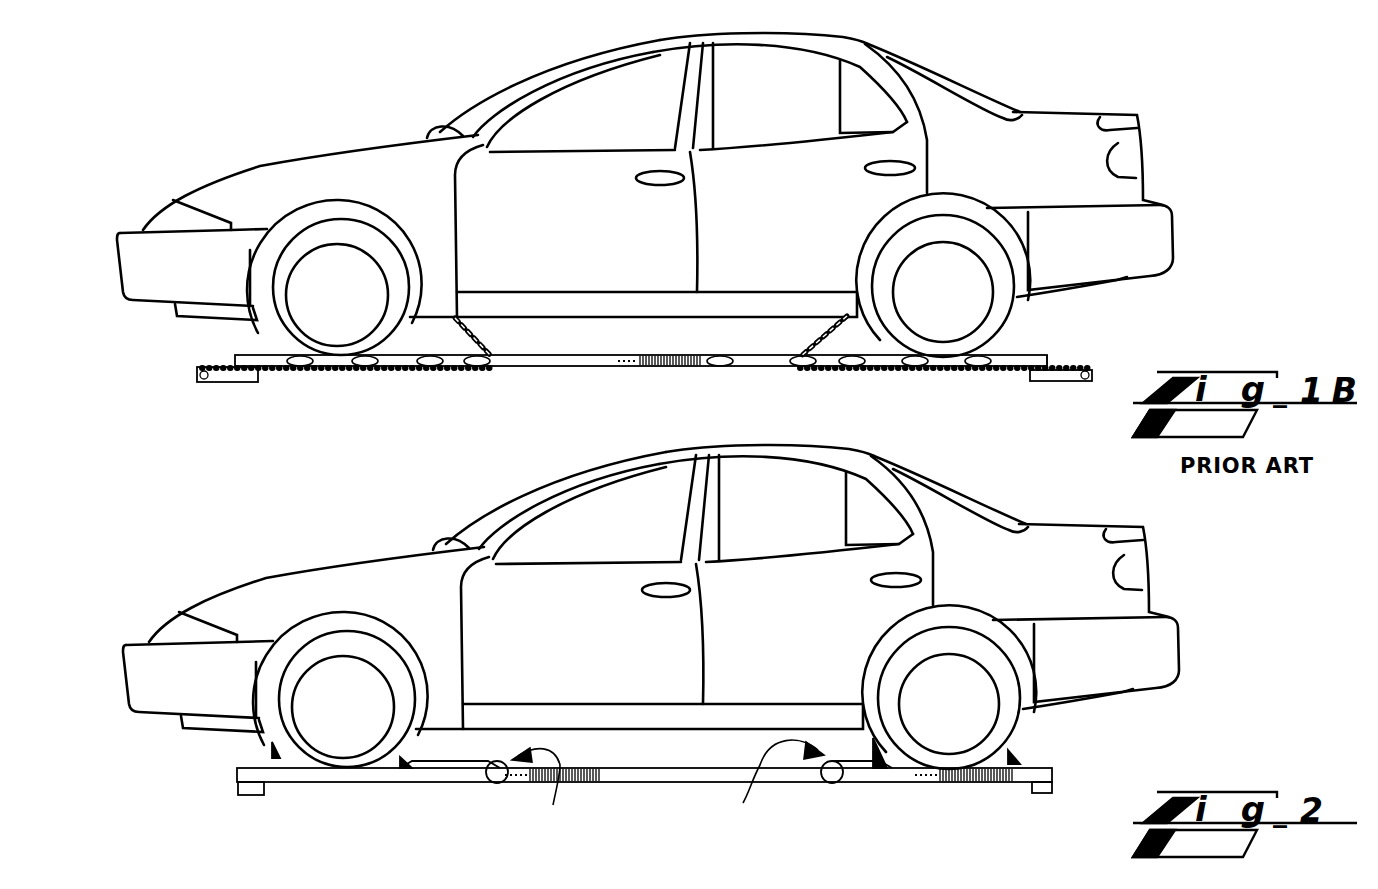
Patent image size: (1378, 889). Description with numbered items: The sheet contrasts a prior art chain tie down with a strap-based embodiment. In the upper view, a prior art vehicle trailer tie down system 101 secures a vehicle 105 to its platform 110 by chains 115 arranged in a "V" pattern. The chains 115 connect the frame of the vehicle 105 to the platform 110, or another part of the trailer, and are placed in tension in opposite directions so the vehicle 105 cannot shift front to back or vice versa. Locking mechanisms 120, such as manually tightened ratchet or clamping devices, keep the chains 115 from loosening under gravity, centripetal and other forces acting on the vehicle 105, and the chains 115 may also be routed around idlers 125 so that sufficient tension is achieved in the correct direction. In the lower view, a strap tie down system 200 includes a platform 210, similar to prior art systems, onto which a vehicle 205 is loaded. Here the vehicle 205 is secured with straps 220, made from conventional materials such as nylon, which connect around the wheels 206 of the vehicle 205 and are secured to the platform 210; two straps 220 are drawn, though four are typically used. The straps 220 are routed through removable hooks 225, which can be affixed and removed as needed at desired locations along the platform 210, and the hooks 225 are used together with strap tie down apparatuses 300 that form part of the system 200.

In FIG. 1B, the prior art vehicle trailer tie down system 101 is at (270, 127).
In FIG. 1B, the vehicle 105 is at (485, 102).
In FIG. 1B, the platform 110 is at (573, 367).
In FIG. 1B, the chains 115 is at (327, 370).
In FIG. 1B, the locking mechanisms 120 is at (203, 383).
In FIG. 1B, the idlers 125 is at (493, 370).
In FIG. 2, the strap tie down system 200 is at (152, 523).
In FIG. 2, the vehicle 205 is at (497, 508).
In FIG. 2, the wheels 206 is at (1017, 716).
In FIG. 2, the platform 210 is at (652, 773).
In FIG. 2, the straps 220 is at (453, 766).
In FIG. 2, the removable hooks 225 is at (240, 798).
In FIG. 2, the strap tie down apparatuses 300 is at (668, 788).